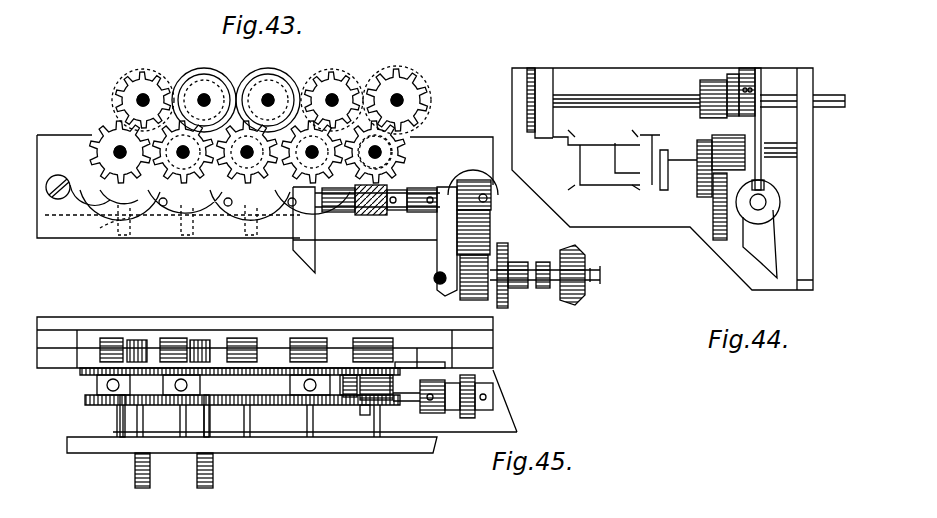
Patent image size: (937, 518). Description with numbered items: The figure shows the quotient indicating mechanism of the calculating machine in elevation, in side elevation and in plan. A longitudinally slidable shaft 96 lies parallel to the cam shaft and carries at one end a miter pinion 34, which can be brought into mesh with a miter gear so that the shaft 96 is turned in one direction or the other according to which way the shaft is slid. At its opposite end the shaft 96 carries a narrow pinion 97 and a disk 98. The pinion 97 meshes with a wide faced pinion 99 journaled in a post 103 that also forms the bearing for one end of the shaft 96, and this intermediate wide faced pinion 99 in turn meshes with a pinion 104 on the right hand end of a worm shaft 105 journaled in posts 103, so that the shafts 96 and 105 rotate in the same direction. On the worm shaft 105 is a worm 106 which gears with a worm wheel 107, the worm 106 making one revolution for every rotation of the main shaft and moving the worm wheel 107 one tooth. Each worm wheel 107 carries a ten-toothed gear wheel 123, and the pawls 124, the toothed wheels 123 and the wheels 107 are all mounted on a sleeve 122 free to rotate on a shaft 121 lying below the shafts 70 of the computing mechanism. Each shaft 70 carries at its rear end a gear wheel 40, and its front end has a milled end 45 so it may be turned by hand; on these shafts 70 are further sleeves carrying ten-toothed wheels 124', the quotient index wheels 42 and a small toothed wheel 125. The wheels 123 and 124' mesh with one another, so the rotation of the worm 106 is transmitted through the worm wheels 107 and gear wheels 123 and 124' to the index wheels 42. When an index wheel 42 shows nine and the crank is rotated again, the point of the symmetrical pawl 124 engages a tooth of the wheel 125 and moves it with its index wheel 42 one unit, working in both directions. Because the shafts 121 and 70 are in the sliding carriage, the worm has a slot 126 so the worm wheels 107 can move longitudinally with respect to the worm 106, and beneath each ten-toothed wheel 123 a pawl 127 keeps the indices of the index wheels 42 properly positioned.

In FIG. 43, the miter pinion 34 is at (580, 292).
In FIG. 44, the gear wheel 40 is at (531, 68).
In FIG. 43, the index wheel 42 is at (210, 78).
In FIG. 44, the index wheel 42 is at (750, 68).
In FIG. 45, the index wheel 42 is at (97, 386).
In FIG. 45, the milled end 45 is at (214, 482).
In FIG. 43, the shaft 70 is at (143, 94).
In FIG. 44, the shaft 70 is at (600, 103).
In FIG. 45, the shaft 70 is at (213, 425).
In FIG. 43, the shaft 96 is at (538, 270).
In FIG. 43, the narrow pinion 97 is at (438, 284).
In FIG. 43, the disk 98 is at (505, 262).
In FIG. 43, the wide faced pinion 99 is at (460, 233).
In FIG. 43, the post 103 is at (455, 257).
In FIG. 44, the post 103 is at (761, 236).
In FIG. 43, the pinion 104 is at (485, 180).
In FIG. 45, the pinion 104 is at (490, 392).
In FIG. 43, the worm shaft 105 is at (410, 196).
In FIG. 44, the worm shaft 105 is at (755, 208).
In FIG. 45, the worm shaft 105 is at (418, 412).
In FIG. 43, the worm 106 is at (372, 216).
In FIG. 44, the worm 106 is at (780, 202).
In FIG. 45, the worm 106 is at (356, 416).
In FIG. 43, the worm wheel 107 is at (170, 172).
In FIG. 44, the worm wheel 107 is at (760, 138).
In FIG. 45, the worm wheel 107 is at (106, 405).
In FIG. 43, the shaft 121 is at (247, 162).
In FIG. 44, the shaft 121 is at (797, 158).
In FIG. 45, the shaft 121 is at (375, 435).
In FIG. 44, the sleeve 122 is at (797, 144).
In FIG. 45, the sleeve 122 is at (396, 375).
In FIG. 43, the ten-toothed gear wheel 123 is at (104, 127).
In FIG. 44, the ten-toothed gear wheel 123 is at (700, 138).
In FIG. 45, the ten-toothed gear wheel 123 is at (398, 360).
In FIG. 43, the pawl 124 is at (286, 103).
In FIG. 45, the pawl 124 is at (307, 325).
In FIG. 43, the ten-toothed wheel 124' is at (427, 132).
In FIG. 44, the ten-toothed wheel 124' is at (740, 74).
In FIG. 45, the ten-toothed wheel 124' is at (113, 323).
In FIG. 43, the small toothed wheel 125 is at (328, 78).
In FIG. 44, the small toothed wheel 125 is at (705, 80).
In FIG. 45, the small toothed wheel 125 is at (162, 335).
In FIG. 44, the slot 126 is at (763, 184).
In FIG. 43, the pawl 127 is at (120, 192).